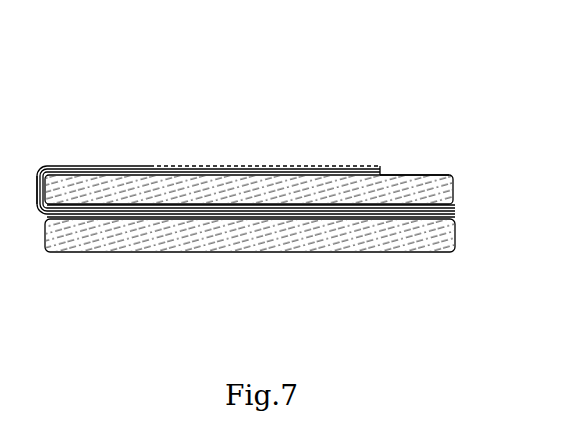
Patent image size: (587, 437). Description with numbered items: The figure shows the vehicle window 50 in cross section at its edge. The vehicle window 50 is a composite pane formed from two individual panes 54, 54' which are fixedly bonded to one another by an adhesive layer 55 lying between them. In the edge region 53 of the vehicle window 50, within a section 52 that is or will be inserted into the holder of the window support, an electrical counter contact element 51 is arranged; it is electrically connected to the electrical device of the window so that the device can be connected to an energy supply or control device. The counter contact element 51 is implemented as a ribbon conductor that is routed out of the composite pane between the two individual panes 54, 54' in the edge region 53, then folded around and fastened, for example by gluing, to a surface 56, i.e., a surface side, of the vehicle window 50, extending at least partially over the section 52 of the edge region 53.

The vehicle window 50 is at (309, 127).
The electrical counter contact element 51 is at (224, 161).
The section of the edge region 52 is at (247, 156).
The edge region 53 is at (92, 161).
The individual pane 54 is at (250, 260).
The individual pane 54' is at (416, 138).
The adhesive layer 55 is at (51, 217).
The surface 56 is at (399, 172).